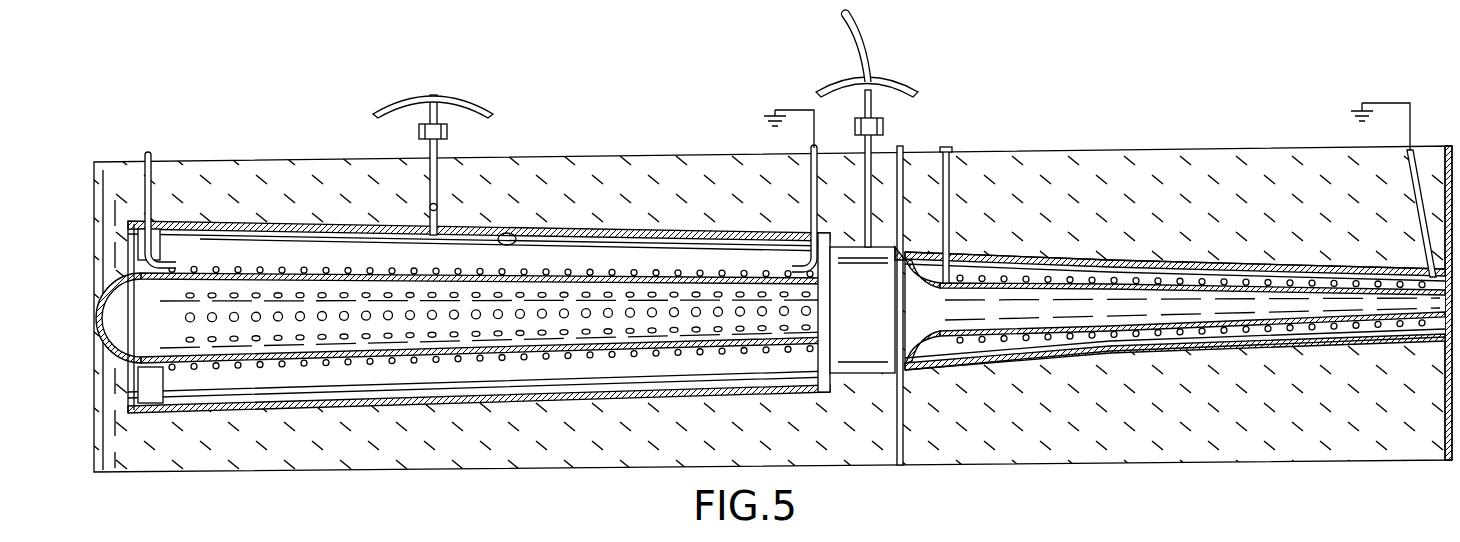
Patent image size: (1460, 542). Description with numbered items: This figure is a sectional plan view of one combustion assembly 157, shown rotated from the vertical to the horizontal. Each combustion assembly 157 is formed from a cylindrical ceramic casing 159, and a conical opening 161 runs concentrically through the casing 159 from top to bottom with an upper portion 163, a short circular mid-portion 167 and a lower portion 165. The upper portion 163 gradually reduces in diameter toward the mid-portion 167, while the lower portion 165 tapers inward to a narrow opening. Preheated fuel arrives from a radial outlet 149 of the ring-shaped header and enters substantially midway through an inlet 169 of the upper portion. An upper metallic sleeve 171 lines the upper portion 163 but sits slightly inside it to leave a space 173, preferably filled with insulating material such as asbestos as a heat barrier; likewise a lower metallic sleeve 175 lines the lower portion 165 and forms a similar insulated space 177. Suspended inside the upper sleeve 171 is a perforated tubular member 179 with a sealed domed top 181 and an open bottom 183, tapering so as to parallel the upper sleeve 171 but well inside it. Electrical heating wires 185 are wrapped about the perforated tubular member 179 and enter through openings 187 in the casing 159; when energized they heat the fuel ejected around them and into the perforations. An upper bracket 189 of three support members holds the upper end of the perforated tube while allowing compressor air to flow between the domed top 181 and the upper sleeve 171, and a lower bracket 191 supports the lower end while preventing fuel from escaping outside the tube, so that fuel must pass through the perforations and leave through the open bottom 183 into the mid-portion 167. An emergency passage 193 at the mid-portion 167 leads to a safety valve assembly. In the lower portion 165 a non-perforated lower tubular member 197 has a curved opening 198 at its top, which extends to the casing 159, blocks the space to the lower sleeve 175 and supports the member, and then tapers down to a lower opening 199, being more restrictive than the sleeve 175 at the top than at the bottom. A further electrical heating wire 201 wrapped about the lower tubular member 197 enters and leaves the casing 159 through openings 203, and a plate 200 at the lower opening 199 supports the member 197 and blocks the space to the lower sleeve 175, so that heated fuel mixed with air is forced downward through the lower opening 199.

The radial outlet 149 is at (444, 138).
The combustion assembly 157 is at (1067, 108).
The cylindrical ceramic casing 159 is at (643, 173).
The conical opening 161 is at (497, 230).
The upper portion 163 is at (298, 229).
The lower portion 165 is at (1132, 263).
The mid-portion 167 is at (882, 366).
The inlet 169 is at (431, 172).
The upper metallic sleeve 171 is at (213, 223).
The space 173 is at (253, 226).
The lower metallic sleeve 175 is at (1081, 262).
The space 177 is at (1012, 256).
The perforated tubular member 179 is at (560, 278).
The sealed domed top 181 is at (126, 366).
The open bottom 183 is at (832, 313).
The electrical heating wires 185 is at (333, 364).
The openings 187 is at (146, 178).
The upper bracket 189 is at (152, 396).
The lower bracket 191 is at (817, 375).
The emergency passage 193 is at (875, 156).
The lower tubular member 197 is at (1180, 280).
The curved opening 198 is at (936, 320).
The lower opening 199 is at (1445, 312).
The plate 200 is at (1452, 462).
The electrical heating wire 201 is at (1166, 334).
The openings 203 is at (960, 156).